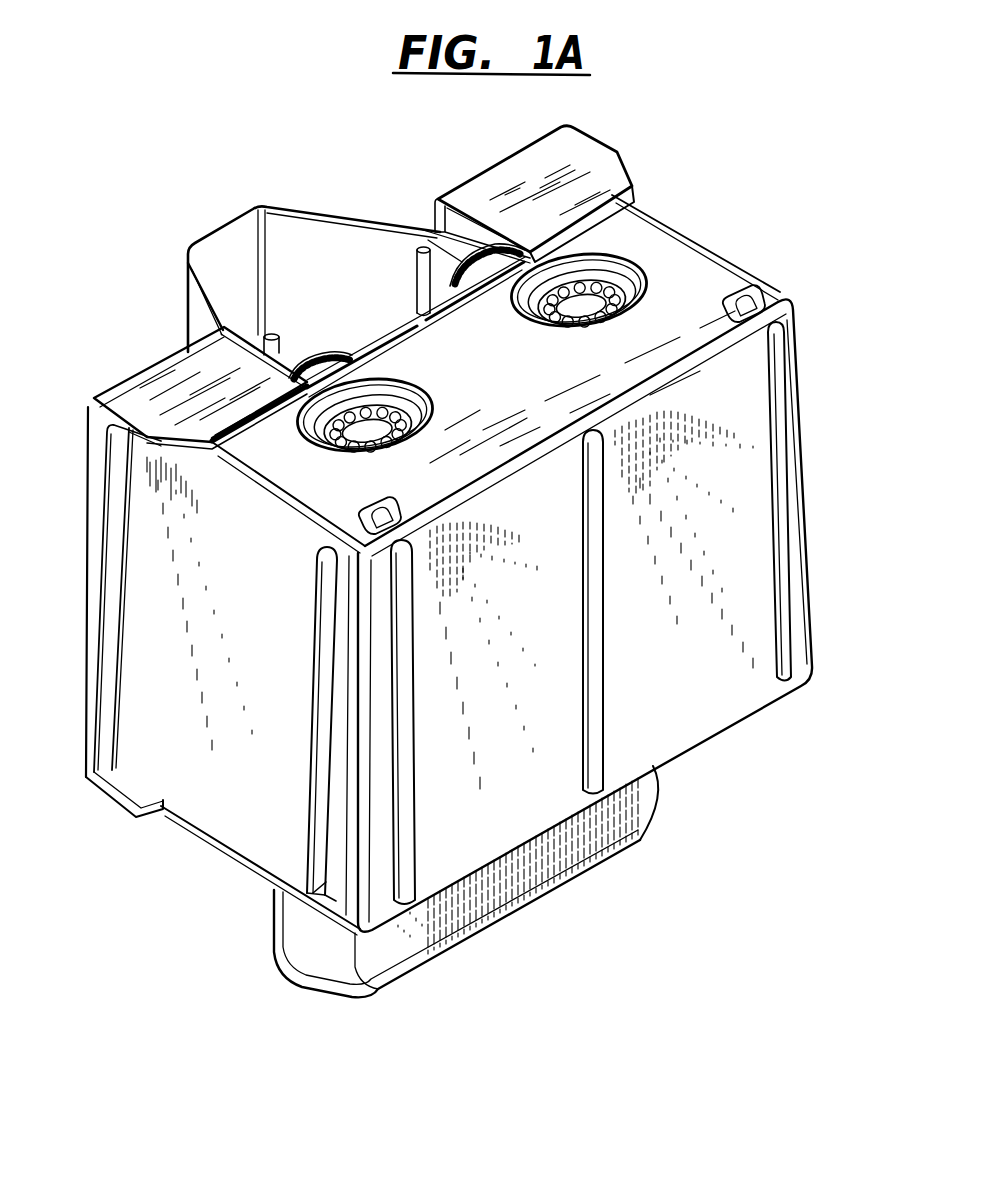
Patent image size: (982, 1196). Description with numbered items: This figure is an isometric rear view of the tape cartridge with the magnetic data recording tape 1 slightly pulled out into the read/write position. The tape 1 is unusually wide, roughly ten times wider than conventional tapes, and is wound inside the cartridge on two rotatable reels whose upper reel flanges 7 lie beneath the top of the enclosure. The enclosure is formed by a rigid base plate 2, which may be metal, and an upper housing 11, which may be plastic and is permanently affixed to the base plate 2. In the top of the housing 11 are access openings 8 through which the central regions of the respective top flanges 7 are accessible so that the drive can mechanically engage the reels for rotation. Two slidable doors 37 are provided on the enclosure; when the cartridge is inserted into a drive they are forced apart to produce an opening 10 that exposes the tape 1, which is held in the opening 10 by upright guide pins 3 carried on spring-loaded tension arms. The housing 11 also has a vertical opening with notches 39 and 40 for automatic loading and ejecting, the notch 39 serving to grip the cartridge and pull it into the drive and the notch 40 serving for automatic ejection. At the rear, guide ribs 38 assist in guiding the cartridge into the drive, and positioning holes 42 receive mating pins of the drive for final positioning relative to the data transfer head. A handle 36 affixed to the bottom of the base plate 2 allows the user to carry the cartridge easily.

The magnetic data recording tape 1 is at (227, 257).
The base plate 2 is at (735, 712).
The guide pins 3 is at (419, 281).
The upper reel flanges 7 is at (462, 265).
The access openings 8 is at (613, 273).
The opening 10 is at (477, 562).
The upper housing 11 is at (183, 774).
The handle 36 is at (545, 852).
The slidable doors 37 is at (152, 404).
The guide ribs 38 is at (797, 368).
The notch 39 is at (326, 556).
The notch 40 is at (325, 892).
The positioning holes 42 is at (742, 303).